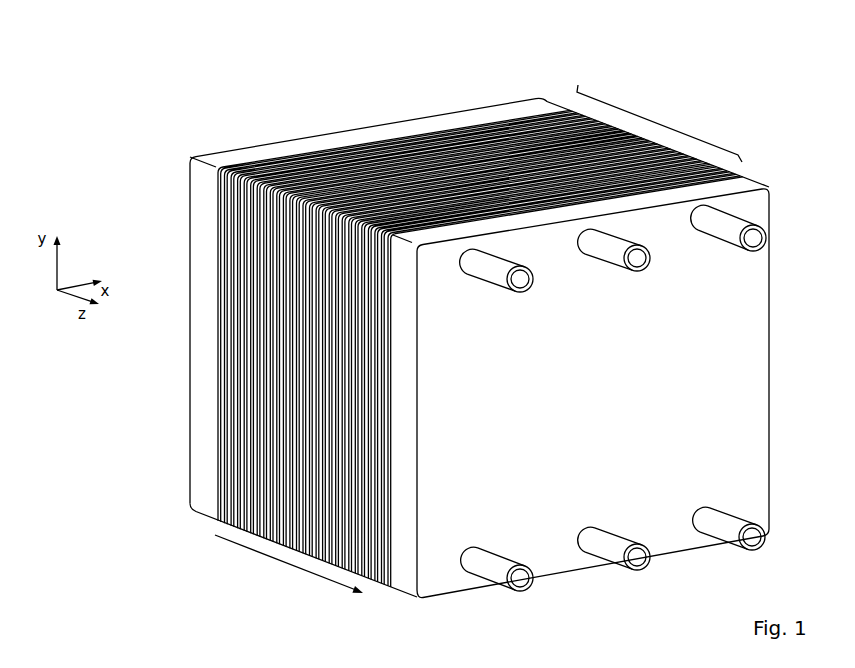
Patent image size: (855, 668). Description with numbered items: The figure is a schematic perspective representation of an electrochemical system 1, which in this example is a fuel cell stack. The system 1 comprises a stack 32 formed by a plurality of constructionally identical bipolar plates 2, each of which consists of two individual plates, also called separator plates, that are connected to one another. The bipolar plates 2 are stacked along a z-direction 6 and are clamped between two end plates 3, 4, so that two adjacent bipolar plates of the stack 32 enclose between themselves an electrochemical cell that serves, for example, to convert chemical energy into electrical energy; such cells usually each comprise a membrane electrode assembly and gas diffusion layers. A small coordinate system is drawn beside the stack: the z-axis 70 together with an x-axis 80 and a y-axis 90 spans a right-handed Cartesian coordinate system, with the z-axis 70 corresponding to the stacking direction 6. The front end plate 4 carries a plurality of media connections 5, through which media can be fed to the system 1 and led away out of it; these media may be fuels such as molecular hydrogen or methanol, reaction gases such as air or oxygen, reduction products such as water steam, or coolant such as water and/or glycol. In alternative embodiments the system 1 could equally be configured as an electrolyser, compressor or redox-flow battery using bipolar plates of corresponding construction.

The electrochemical system 1 is at (398, 104).
The bipolar plates 2 is at (262, 182).
The end plate 3 is at (203, 477).
The end plate 4 is at (408, 567).
The media connections 5 is at (497, 273).
The z-direction 6 is at (289, 564).
The stack 32 is at (659, 124).
The z-axis 70 is at (72, 298).
The x-axis 80 is at (87, 282).
The y-axis 90 is at (57, 276).